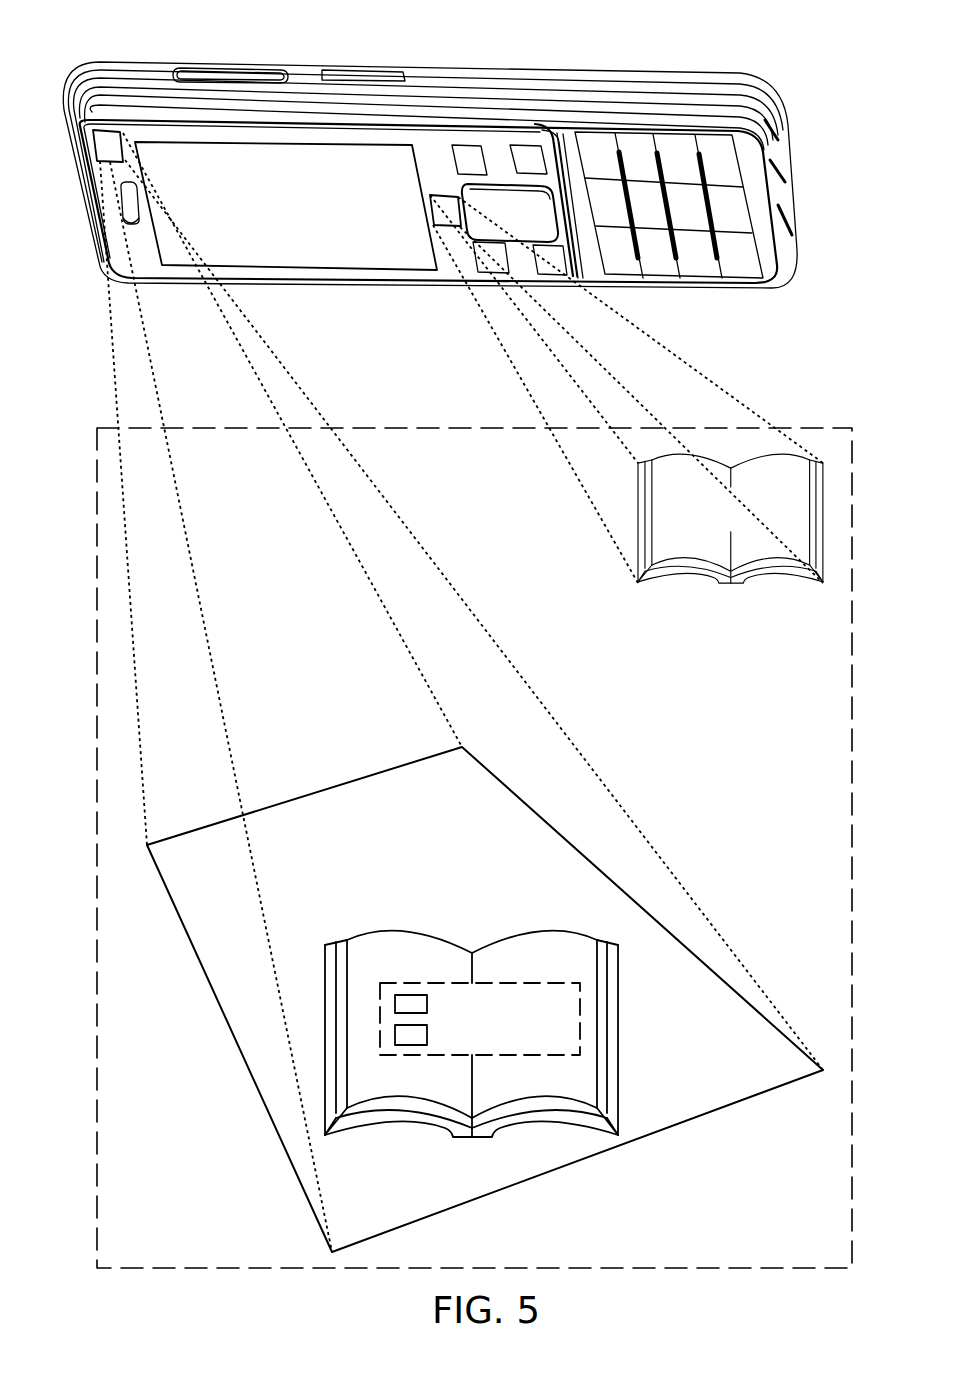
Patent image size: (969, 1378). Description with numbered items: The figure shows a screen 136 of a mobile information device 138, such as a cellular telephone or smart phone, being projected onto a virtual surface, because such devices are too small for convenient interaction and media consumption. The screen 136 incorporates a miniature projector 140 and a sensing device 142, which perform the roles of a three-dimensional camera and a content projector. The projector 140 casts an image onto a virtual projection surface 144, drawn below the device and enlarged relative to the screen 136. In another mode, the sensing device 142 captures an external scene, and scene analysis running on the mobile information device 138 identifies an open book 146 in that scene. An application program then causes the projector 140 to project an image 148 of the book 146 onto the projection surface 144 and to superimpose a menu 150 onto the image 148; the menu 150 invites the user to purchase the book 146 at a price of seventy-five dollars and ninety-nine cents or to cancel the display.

The screen 136 is at (296, 151).
The mobile information device 138 is at (503, 68).
The miniature projector 140 is at (107, 138).
The sensing device 142 is at (453, 200).
The virtual projection surface 144 is at (735, 1107).
The open book 146 is at (767, 583).
The image of the book 148 is at (620, 1042).
The menu 150 is at (410, 981).